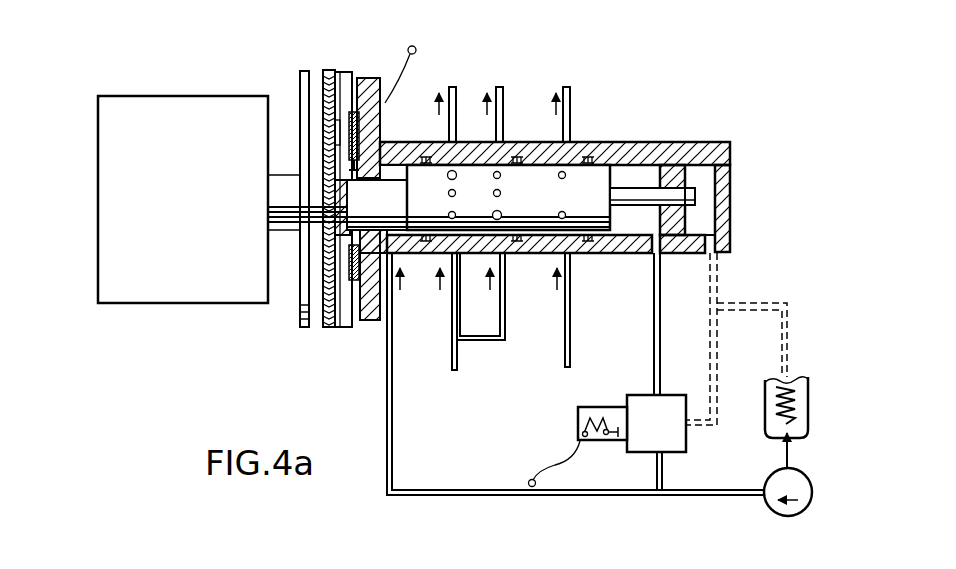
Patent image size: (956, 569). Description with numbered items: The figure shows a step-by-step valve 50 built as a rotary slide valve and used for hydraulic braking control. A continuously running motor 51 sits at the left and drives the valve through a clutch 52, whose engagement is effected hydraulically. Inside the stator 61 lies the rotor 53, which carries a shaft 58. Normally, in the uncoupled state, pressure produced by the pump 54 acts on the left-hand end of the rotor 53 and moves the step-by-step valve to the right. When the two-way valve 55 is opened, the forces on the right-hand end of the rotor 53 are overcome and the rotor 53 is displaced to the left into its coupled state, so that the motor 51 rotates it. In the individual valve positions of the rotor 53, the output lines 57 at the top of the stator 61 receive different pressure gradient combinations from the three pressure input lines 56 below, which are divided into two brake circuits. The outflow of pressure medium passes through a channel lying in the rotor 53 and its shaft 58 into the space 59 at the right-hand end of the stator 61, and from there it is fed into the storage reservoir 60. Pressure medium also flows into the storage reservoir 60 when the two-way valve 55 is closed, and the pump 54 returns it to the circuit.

The step-by-step valve 50 is at (538, 182).
The motor 51 is at (172, 288).
The clutch 52 is at (322, 332).
The rotor 53 is at (600, 182).
The pump 54 is at (770, 508).
The two-way valve 55 is at (645, 405).
The pressure input lines 56 is at (567, 320).
The output lines 57 is at (456, 104).
The shaft 58 is at (652, 205).
The space 59 is at (708, 209).
The storage reservoir 60 is at (768, 388).
The stator 61 is at (670, 142).